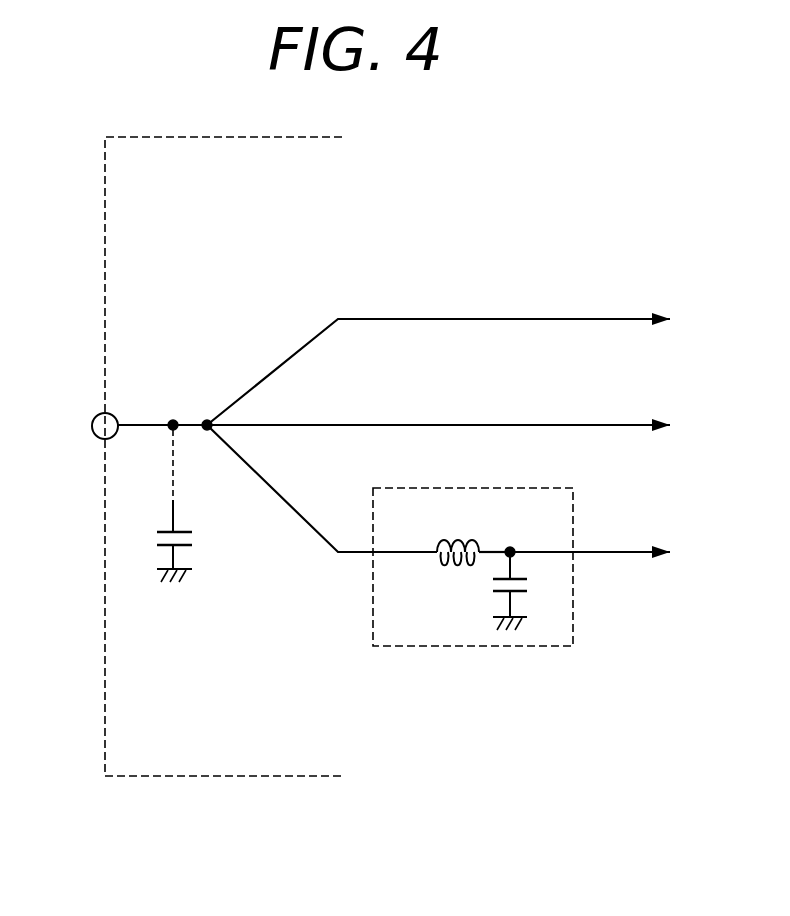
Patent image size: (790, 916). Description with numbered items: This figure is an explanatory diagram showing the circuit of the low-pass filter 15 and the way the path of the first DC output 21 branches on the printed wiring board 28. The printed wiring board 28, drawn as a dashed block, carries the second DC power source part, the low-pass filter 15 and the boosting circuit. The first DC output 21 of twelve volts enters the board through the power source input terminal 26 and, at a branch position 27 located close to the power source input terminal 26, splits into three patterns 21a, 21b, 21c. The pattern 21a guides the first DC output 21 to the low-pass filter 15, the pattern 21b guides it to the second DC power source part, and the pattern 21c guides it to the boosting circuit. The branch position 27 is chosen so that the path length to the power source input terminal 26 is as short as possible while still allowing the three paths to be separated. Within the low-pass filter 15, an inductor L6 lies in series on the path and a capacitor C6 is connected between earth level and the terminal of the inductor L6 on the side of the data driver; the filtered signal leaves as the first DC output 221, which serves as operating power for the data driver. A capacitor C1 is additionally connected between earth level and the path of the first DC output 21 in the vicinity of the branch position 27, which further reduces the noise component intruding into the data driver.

The printed wiring board 28 is at (175, 778).
The power source input terminal 26 is at (95, 436).
The first DC output 21 is at (148, 423).
The branch position 27 is at (207, 420).
The capacitor C1 is at (190, 506).
The pattern 21c is at (518, 316).
The pattern 21b is at (518, 422).
The pattern 21a is at (297, 512).
The low-pass filter 15 is at (475, 648).
The inductor L6 is at (473, 536).
The capacitor C6 is at (491, 588).
The first DC output 221 is at (620, 549).